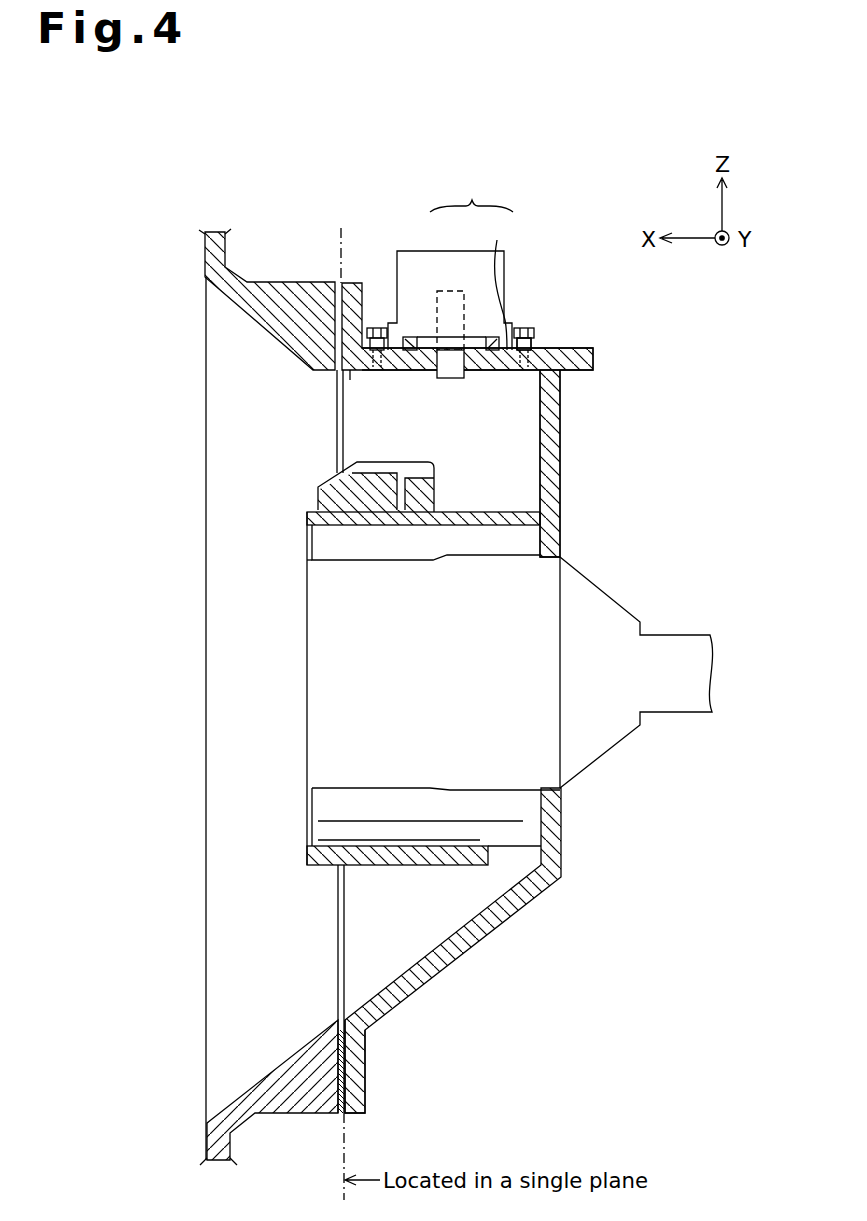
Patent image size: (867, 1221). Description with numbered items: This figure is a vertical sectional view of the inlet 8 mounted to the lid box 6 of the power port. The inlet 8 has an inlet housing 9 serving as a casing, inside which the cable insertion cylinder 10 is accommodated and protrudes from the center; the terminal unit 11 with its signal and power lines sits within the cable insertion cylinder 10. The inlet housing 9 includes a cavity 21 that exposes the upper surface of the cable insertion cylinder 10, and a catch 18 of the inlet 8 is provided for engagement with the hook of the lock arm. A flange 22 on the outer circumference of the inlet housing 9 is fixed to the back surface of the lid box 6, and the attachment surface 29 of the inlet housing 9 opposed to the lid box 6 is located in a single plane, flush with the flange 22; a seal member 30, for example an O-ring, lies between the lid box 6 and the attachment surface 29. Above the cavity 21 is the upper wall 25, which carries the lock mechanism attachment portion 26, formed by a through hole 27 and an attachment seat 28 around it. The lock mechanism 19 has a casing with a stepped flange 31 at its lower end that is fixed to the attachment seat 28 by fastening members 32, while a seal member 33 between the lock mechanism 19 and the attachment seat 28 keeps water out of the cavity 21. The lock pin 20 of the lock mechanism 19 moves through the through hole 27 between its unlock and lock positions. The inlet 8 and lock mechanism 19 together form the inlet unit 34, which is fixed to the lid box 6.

The lid box 6 is at (206, 253).
The inlet 8 is at (473, 741).
The inlet housing 9 is at (557, 482).
The cable insertion cylinder 10 is at (307, 513).
The terminal unit 11 is at (318, 801).
The catch 18 is at (385, 462).
The lock mechanism 19 is at (407, 251).
The lock pin 20 is at (451, 378).
The cavity 21 is at (350, 380).
The flange 22 is at (354, 283).
The upper wall 25 is at (545, 349).
The lock mechanism attachment portion 26 is at (471, 194).
The through hole 27 is at (485, 358).
The attachment seat 28 is at (501, 281).
The attachment surface 29 is at (338, 1085).
The seal member 30 is at (352, 1062).
The flange 31 is at (536, 345).
The fastening members 32 is at (377, 328).
The seal member 33 is at (415, 337).
The inlet unit 34 is at (457, 960).